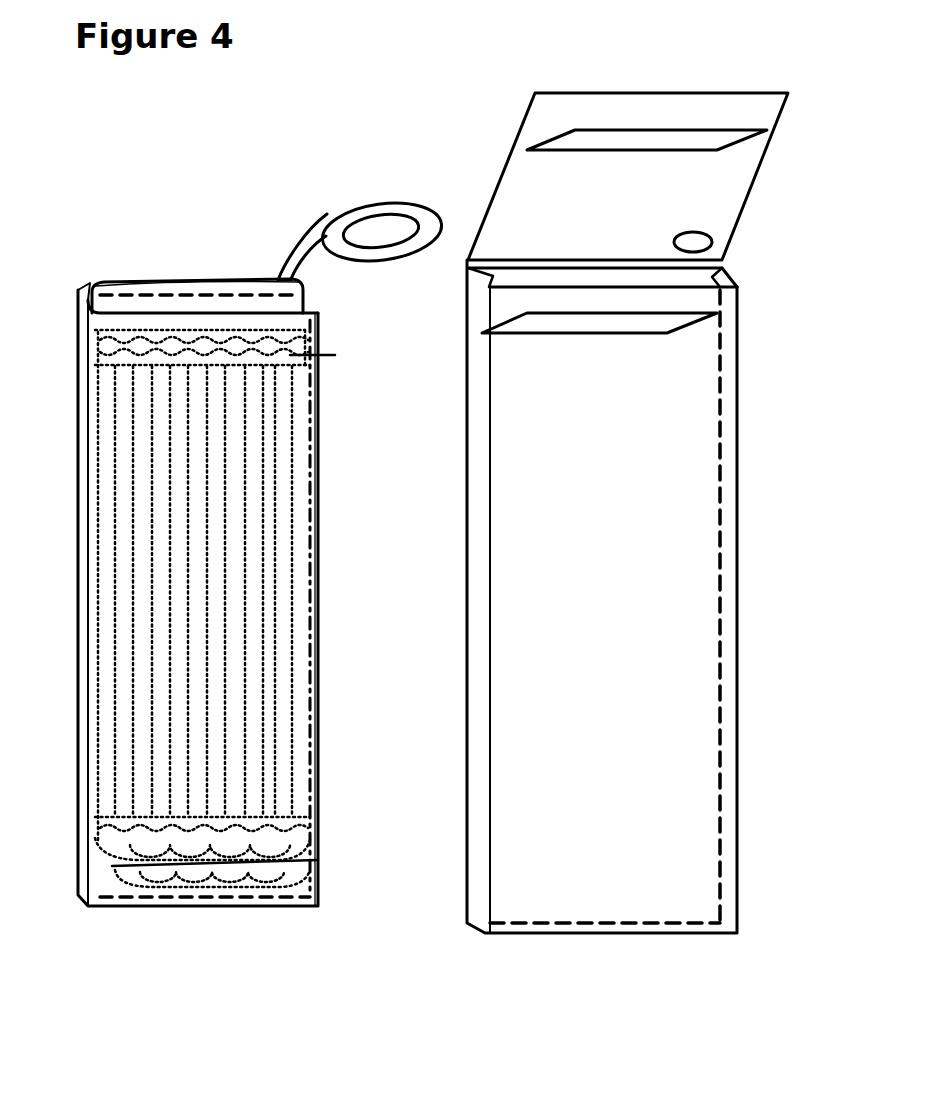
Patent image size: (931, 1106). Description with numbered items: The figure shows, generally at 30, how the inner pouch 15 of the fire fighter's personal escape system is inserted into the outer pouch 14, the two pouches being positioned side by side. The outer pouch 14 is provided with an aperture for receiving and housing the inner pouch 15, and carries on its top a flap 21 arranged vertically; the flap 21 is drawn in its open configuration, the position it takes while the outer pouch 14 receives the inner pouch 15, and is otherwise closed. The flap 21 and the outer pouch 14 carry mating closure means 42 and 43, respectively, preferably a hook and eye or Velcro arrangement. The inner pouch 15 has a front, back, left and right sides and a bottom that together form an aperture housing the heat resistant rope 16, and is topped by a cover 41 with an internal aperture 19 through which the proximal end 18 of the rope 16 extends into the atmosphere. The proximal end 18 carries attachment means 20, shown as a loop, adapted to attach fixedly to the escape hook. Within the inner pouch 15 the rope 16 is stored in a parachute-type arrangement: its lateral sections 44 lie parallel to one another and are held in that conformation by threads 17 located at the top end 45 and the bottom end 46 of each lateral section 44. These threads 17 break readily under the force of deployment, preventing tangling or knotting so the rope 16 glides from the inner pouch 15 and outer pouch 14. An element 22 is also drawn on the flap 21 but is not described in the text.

The outer pouch 14 is at (467, 803).
The inner pouch 15 is at (320, 420).
The heat resistant rope 16 is at (302, 630).
The threads 17 is at (335, 355).
The proximal end 18 is at (292, 247).
The internal aperture 19 is at (305, 282).
The attachment means 20 is at (322, 212).
The flap 21 is at (500, 167).
The hole 22 is at (684, 243).
The fire fighter's personal escape system 30 is at (316, 156).
The cover 41 is at (97, 284).
The mating closure means 42 is at (527, 136).
The mating closure means 43 is at (495, 325).
The lateral sections 44 is at (100, 712).
The top end 45 is at (100, 345).
The bottom end 46 is at (100, 850).